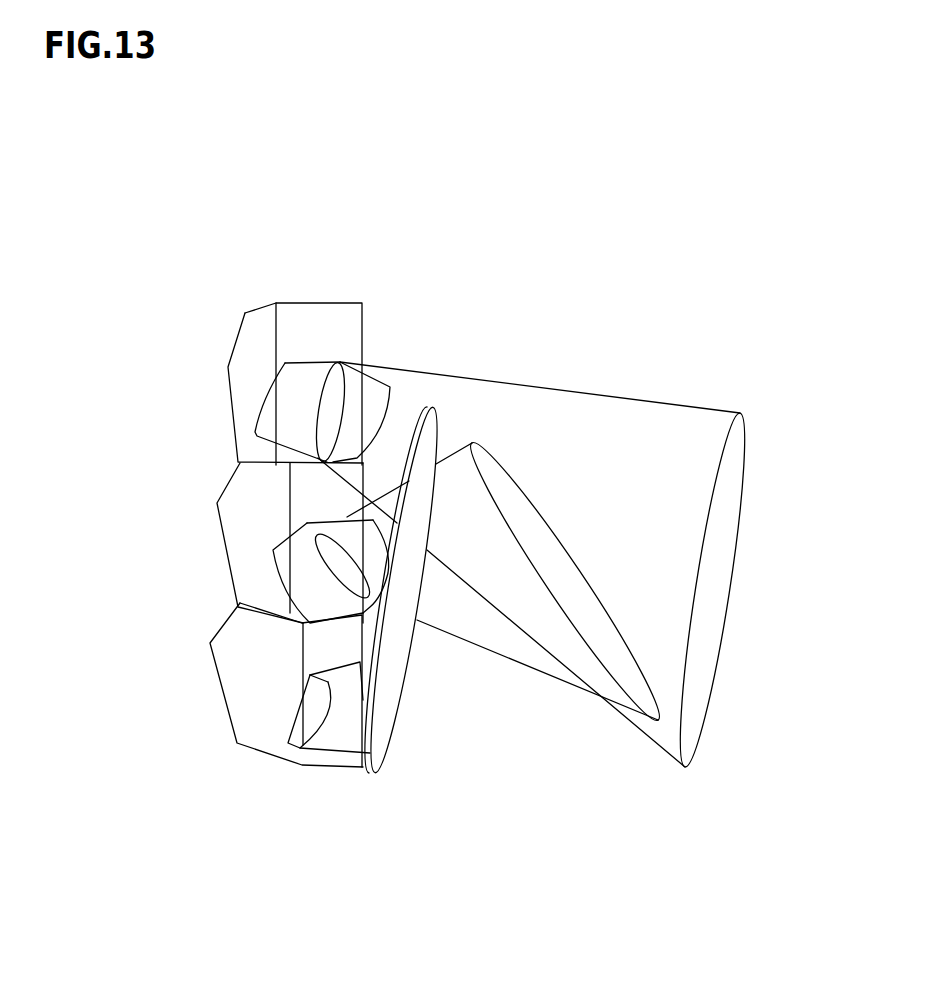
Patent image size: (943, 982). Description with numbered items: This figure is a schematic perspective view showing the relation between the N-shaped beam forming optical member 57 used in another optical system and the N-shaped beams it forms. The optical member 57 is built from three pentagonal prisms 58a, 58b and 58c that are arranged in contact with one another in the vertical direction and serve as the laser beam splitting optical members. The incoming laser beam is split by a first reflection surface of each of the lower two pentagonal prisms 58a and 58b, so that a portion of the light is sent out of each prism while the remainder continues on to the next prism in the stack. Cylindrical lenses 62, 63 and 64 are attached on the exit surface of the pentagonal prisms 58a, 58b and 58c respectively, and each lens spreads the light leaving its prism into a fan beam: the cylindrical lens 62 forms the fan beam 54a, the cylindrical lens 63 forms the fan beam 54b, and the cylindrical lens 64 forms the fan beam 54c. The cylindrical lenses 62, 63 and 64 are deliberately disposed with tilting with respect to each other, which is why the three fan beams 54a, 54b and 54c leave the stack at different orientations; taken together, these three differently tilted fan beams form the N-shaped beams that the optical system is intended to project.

The optical unit 57 is at (218, 327).
The pentagonal prism 58a is at (253, 752).
The pentagonal prism 58b is at (228, 548).
The pentagonal prism 58c is at (268, 303).
The cylindrical lens 62 is at (300, 718).
The cylindrical lens 63 is at (282, 550).
The cylindrical lens 64 is at (315, 362).
The fan beam 54a is at (412, 685).
The fan beam 54b is at (540, 517).
The fan beam 54c is at (743, 463).